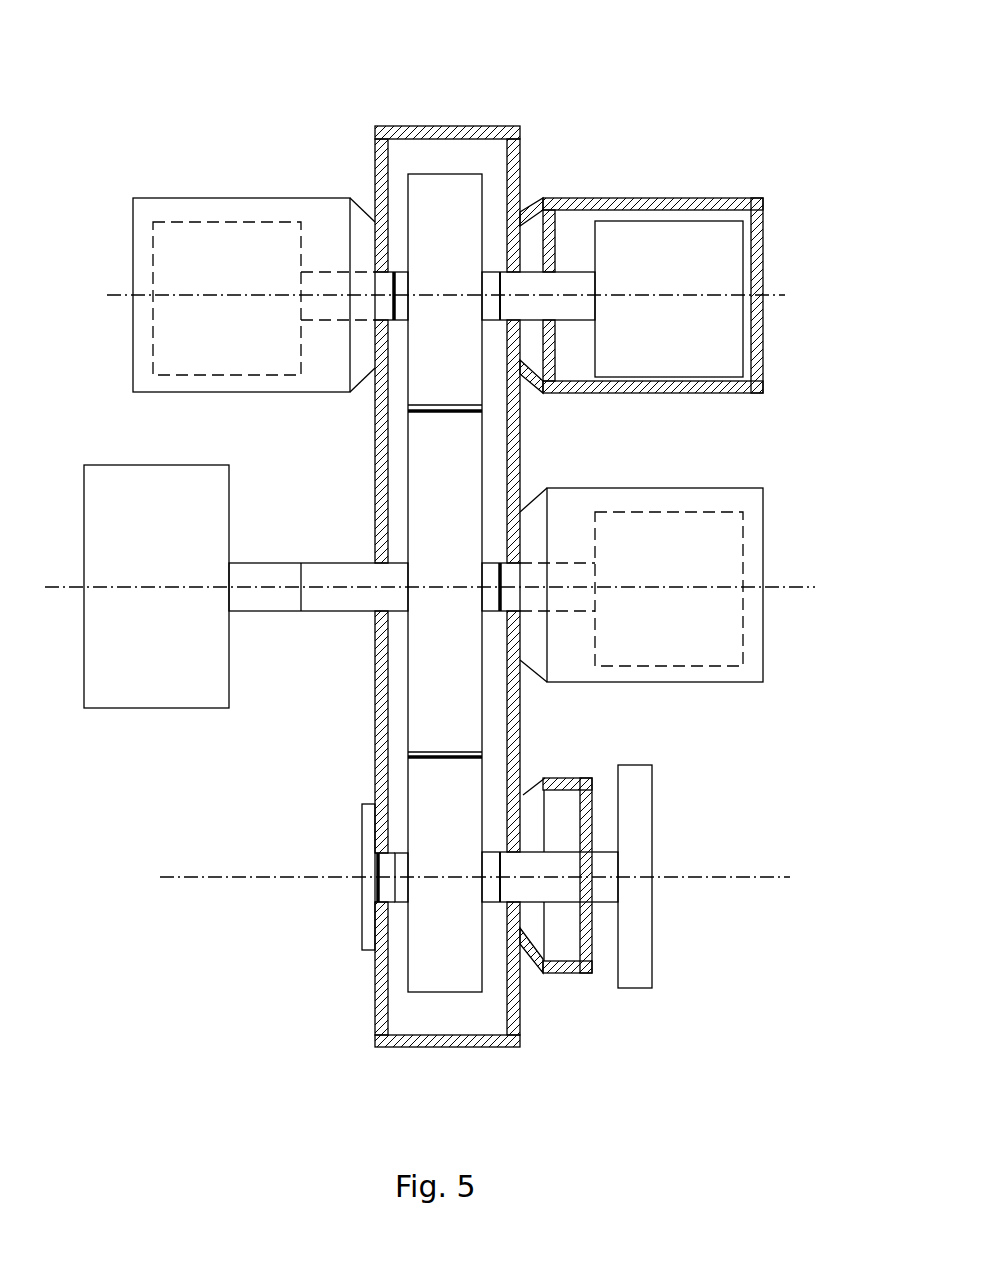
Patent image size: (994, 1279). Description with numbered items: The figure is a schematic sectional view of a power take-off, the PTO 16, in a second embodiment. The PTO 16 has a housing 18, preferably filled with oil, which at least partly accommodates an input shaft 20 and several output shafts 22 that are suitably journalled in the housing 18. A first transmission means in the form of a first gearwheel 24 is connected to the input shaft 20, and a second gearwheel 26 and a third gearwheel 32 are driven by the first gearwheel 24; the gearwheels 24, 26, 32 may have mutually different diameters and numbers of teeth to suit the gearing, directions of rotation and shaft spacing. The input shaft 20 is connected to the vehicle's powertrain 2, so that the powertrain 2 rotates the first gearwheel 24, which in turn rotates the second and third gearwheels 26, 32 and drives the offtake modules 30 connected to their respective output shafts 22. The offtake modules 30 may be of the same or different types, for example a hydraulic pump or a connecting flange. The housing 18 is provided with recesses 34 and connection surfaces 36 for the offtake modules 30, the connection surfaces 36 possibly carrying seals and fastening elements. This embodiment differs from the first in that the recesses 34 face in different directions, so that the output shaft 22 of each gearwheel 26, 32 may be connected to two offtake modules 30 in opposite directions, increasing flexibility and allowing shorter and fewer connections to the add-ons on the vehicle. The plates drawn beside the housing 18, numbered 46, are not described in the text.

The PTO 16 is at (565, 90).
The housing 18 is at (383, 126).
The second gearwheel 26 is at (432, 174).
The first gearwheel 24 is at (408, 440).
The third gearwheel 32 is at (407, 810).
The powertrain 2 is at (135, 465).
The input shaft 20 is at (338, 563).
The output shaft 22 is at (400, 272).
The offtake module 30 is at (178, 198).
The plate 46 is at (362, 852).
The recess 34 is at (378, 855).
The connection surface 36 is at (375, 915).